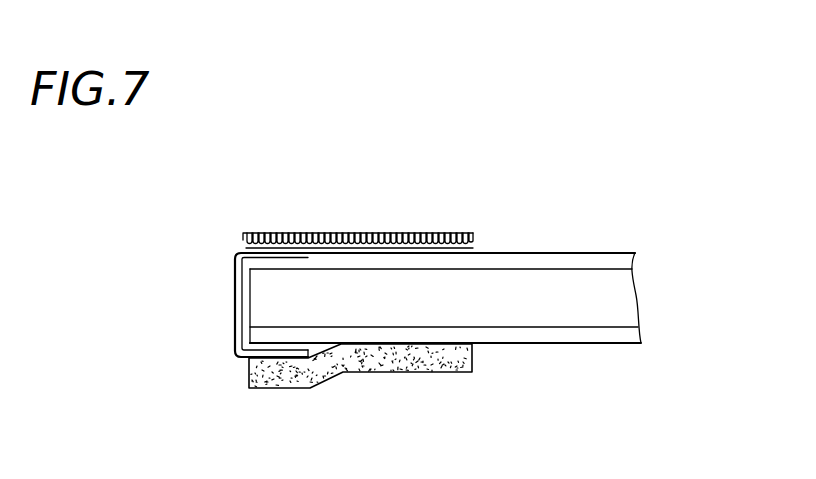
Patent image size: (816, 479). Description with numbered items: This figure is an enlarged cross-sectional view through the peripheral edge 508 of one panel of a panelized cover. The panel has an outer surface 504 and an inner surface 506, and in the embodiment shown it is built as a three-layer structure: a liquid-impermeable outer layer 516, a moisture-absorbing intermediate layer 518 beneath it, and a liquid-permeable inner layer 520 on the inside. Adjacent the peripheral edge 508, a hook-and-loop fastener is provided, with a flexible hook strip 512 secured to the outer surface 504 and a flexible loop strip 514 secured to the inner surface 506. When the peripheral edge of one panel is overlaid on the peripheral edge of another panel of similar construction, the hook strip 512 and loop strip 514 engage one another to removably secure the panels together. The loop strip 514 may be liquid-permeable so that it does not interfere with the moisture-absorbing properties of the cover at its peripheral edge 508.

The outer surface 504 is at (513, 253).
The inner surface 506 is at (538, 345).
The peripheral edge 508 is at (235, 285).
The hook strip 512 is at (352, 233).
The loop strip 514 is at (282, 388).
The liquid-impermeable outer layer 516 is at (590, 260).
The moisture-absorbing intermediate layer 518 is at (620, 300).
The liquid-permeable inner layer 520 is at (597, 345).